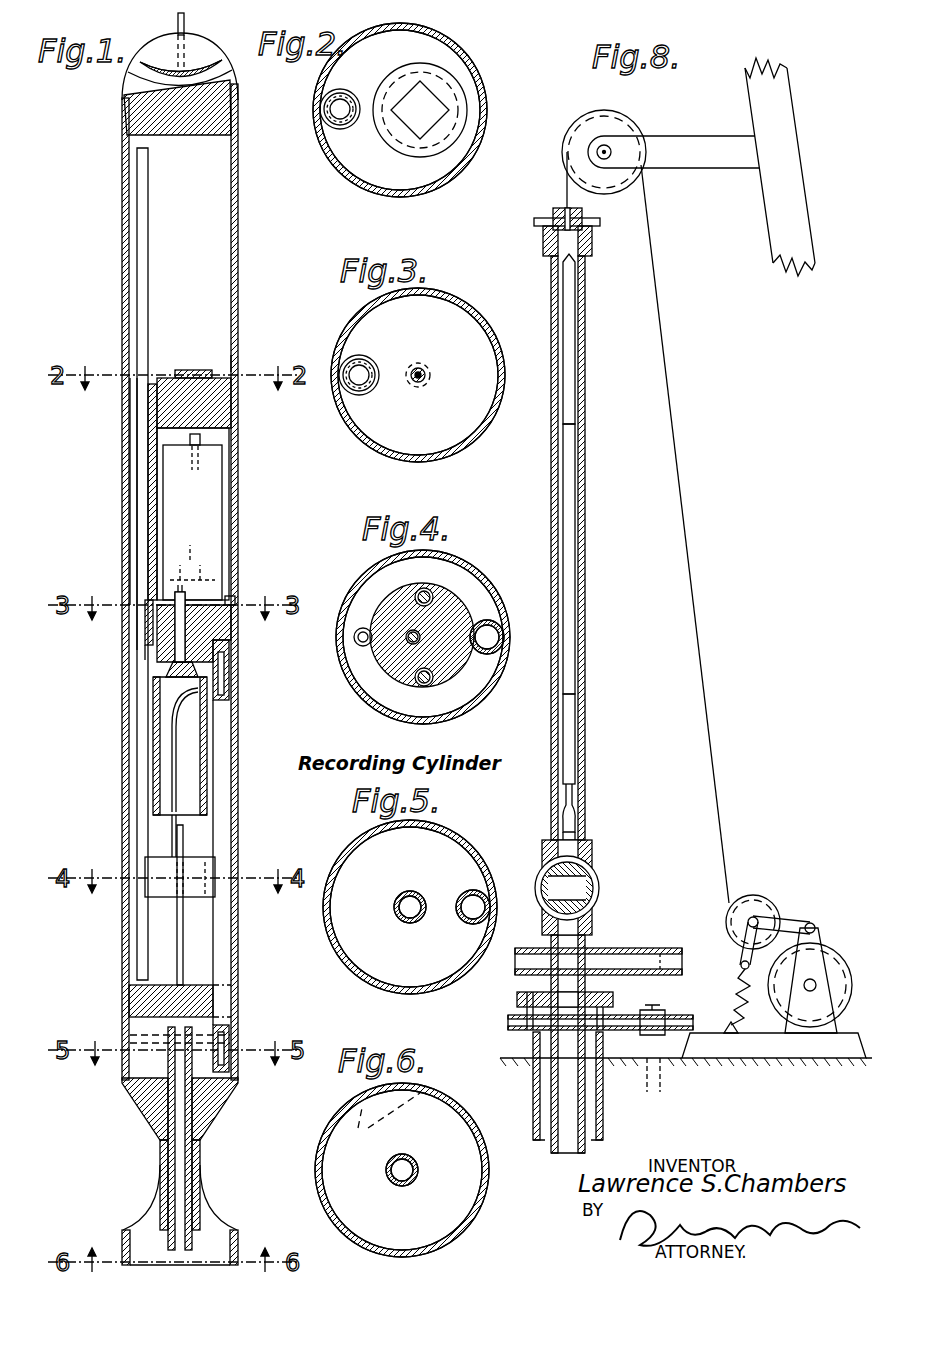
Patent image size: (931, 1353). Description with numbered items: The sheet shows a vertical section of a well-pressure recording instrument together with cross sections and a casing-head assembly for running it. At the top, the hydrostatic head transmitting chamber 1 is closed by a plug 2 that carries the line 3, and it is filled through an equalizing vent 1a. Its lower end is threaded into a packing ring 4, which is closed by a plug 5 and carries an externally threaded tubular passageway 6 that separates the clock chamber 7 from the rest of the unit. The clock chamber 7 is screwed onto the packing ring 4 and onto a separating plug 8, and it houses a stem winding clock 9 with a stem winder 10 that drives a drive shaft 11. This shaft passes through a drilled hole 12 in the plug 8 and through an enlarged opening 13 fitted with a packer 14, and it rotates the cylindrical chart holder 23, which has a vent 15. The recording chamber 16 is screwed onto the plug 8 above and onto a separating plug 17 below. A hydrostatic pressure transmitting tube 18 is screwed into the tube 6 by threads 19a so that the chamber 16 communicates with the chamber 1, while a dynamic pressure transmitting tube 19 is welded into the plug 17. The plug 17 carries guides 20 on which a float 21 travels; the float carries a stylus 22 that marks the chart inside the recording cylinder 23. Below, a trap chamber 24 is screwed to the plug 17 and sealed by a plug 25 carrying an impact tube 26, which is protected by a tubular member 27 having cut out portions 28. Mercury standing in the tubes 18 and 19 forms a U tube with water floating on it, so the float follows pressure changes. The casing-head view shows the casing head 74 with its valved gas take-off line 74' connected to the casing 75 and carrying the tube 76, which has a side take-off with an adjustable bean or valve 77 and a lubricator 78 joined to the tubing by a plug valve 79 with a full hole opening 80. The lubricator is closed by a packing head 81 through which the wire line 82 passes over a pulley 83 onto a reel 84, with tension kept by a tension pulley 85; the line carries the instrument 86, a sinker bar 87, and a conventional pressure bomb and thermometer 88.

In FIG. 1, the hydrostatic head transmitting chamber 1 is at (236, 279).
In FIG. 2, the hydrostatic head transmitting chamber 1 is at (472, 149).
In FIG. 1, the equalizing vent 1a is at (236, 362).
In FIG. 1, the plug 2 is at (228, 87).
In FIG. 1, the line 3 is at (186, 20).
In FIG. 1, the packing ring 4 is at (180, 376).
In FIG. 2, the packing ring 4 is at (420, 122).
In FIG. 1, the plug 5 is at (200, 370).
In FIG. 2, the plug 5 is at (420, 110).
In FIG. 1, the tubular passageway 6 is at (148, 378).
In FIG. 2, the tubular passageway 6 is at (352, 127).
In FIG. 3, the tubular passageway 6 is at (372, 392).
In FIG. 1, the clock chamber 7 is at (230, 448).
In FIG. 3, the clock chamber 7 is at (496, 341).
In FIG. 1, the separating plug 8 is at (248, 604).
In FIG. 3, the separating plug 8 is at (424, 398).
In FIG. 1, the stem winding clock 9 is at (172, 514).
In FIG. 1, the stem winder 10 is at (192, 445).
In FIG. 1, the drive shaft 11 is at (190, 597).
In FIG. 3, the drive shaft 11 is at (421, 370).
In FIG. 1, the drilled hole 12 is at (226, 618).
In FIG. 1, the enlarged opening 13 is at (150, 668).
In FIG. 3, the enlarged opening 13 is at (430, 381).
In FIG. 1, the packer 14 is at (205, 660).
In FIG. 1, the vent 15 is at (200, 682).
In FIG. 1, the recording chamber 16 is at (235, 728).
In FIG. 4, the recording chamber 16 is at (428, 722).
In FIG. 1, the separating plug 17 is at (130, 996).
In FIG. 1, the hydrostatic pressure transmitting tube 18 is at (140, 276).
In FIG. 4, the hydrostatic pressure transmitting tube 18 is at (358, 646).
In FIG. 1, the dynamic pressure transmitting tube 19 is at (225, 914).
In FIG. 4, the dynamic pressure transmitting tube 19 is at (500, 633).
In FIG. 5, the dynamic pressure transmitting tube 19 is at (462, 921).
In FIG. 1, the threads 19a is at (145, 632).
In FIG. 1, the guides 20 is at (184, 949).
In FIG. 4, the guides 20 is at (424, 590).
In FIG. 1, the float 21 is at (200, 870).
In FIG. 4, the float 21 is at (452, 604).
In FIG. 1, the stylus 22 is at (172, 823).
In FIG. 4, the stylus 22 is at (410, 643).
In FIG. 1, the cylindrical chart holder 23 is at (185, 781).
In FIG. 1, the trap chamber 24 is at (235, 1042).
In FIG. 5, the trap chamber 24 is at (432, 990).
In FIG. 1, the plug 25 is at (215, 1110).
In FIG. 1, the impact tube 26 is at (172, 1060).
In FIG. 5, the impact tube 26 is at (400, 895).
In FIG. 6, the impact tube 26 is at (414, 1160).
In FIG. 1, the tubular member 27 is at (236, 1244).
In FIG. 6, the tubular member 27 is at (485, 1188).
In FIG. 1, the cut out portions 28 is at (160, 1202).
In FIG. 6, the cut out portions 28 is at (376, 1128).
In FIG. 8, the casing head 74 is at (591, 1007).
In FIG. 8, the valved gas take-off line 74' is at (613, 1010).
In FIG. 8, the casing 75 is at (600, 1120).
In FIG. 8, the tube 76 is at (578, 1110).
In FIG. 8, the adjustable bean or valve 77 is at (661, 953).
In FIG. 8, the lubricator 78 is at (580, 762).
In FIG. 8, the plug valve 79 is at (576, 890).
In FIG. 8, the full hole opening 80 is at (592, 864).
In FIG. 8, the packing head 81 is at (590, 219).
In FIG. 8, the wire line 82 is at (566, 194).
In FIG. 8, the pulley 83 is at (620, 130).
In FIG. 8, the reel 84 is at (830, 962).
In FIG. 8, the tension pulley 85 is at (762, 900).
In FIG. 8, the instrument 86 is at (570, 720).
In FIG. 8, the sinker bar 87 is at (570, 598).
In FIG. 8, the pressure bomb and thermometer 88 is at (570, 353).